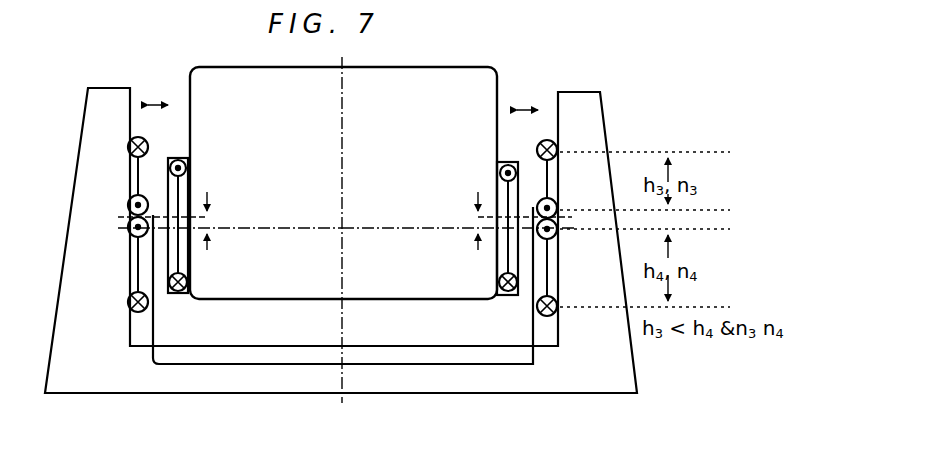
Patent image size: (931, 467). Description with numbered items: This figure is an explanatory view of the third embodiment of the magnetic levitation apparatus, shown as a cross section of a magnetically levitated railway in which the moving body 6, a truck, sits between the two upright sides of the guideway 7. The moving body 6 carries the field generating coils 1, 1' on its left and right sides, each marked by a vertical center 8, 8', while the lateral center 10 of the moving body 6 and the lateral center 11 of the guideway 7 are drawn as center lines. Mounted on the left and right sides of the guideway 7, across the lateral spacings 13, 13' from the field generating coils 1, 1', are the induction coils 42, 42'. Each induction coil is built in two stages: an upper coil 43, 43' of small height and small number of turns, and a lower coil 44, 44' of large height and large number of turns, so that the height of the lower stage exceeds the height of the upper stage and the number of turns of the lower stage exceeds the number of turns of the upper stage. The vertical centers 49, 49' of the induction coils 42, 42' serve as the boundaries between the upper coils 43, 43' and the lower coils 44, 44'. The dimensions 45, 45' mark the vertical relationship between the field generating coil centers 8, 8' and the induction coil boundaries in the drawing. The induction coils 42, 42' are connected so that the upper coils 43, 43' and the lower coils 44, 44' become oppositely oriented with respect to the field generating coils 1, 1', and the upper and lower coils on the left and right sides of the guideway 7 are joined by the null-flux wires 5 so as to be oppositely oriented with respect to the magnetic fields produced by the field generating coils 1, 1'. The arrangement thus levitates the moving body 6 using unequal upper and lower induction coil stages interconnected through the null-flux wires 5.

The field generating coil 1 is at (487, 274).
The field generating coil 1' is at (203, 273).
The null-flux wires 5 is at (395, 366).
The moving body (truck) 6 is at (400, 67).
The guideway 7 is at (460, 393).
The vertical center of the field generating coil 8 is at (458, 199).
The vertical center of the field generating coil 8' is at (230, 199).
The lateral center of the moving body 10 is at (342, 115).
The lateral center of the guideway 11 is at (340, 385).
The lateral spacing 13 is at (530, 95).
The lateral spacing 13' is at (164, 91).
The induction coil 42 is at (575, 218).
The induction coil 42' is at (114, 215).
The upper coil of the induction coil 43 is at (575, 169).
The upper coil of the induction coil 43' is at (114, 166).
The lower coil of the induction coil 44 is at (575, 277).
The lower coil of the induction coil 44' is at (114, 274).
The offset 45 is at (512, 218).
The offset 45' is at (181, 217).
The vertical center of the induction coil 49 is at (493, 223).
The vertical center of the induction coil 49' is at (198, 221).